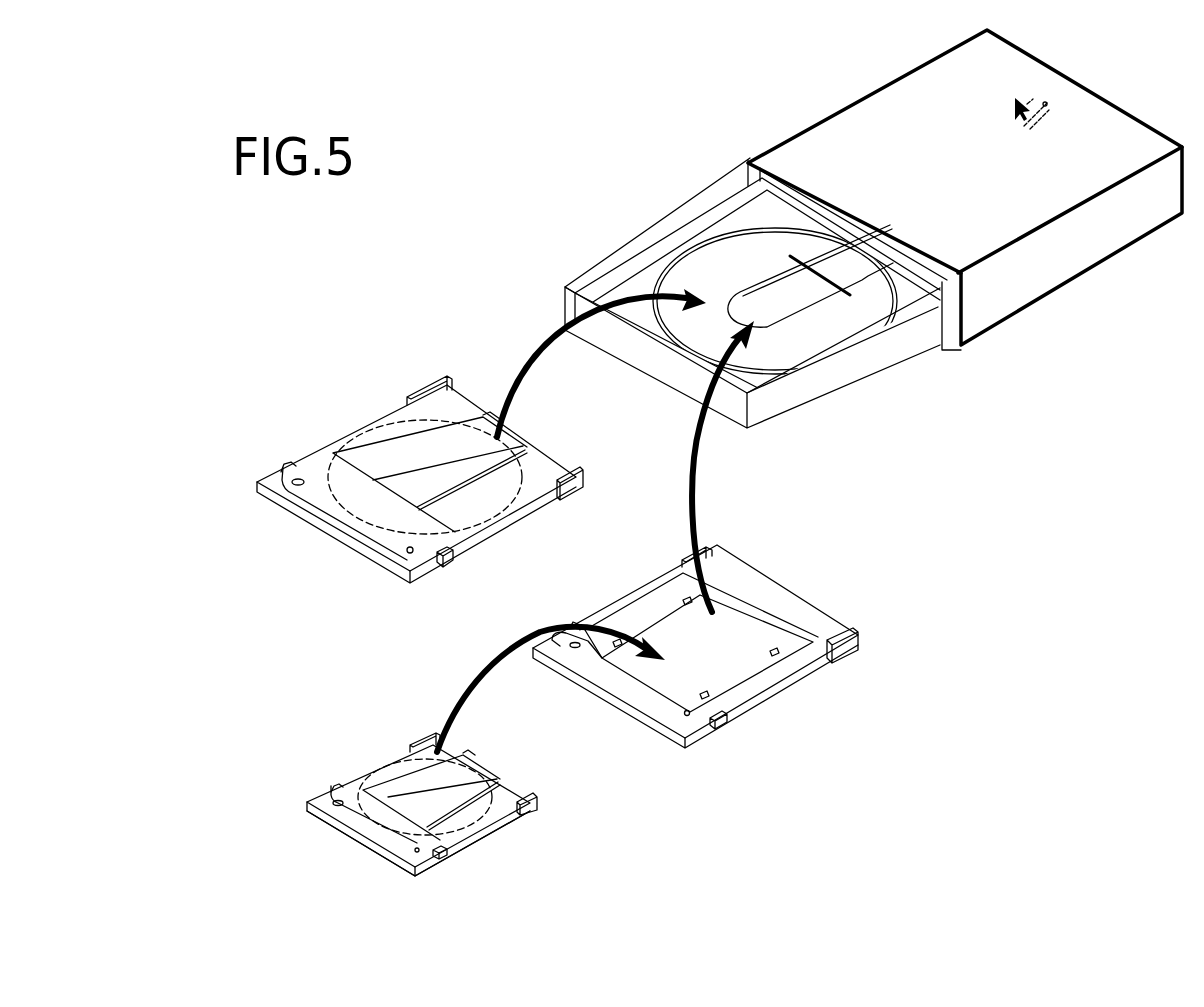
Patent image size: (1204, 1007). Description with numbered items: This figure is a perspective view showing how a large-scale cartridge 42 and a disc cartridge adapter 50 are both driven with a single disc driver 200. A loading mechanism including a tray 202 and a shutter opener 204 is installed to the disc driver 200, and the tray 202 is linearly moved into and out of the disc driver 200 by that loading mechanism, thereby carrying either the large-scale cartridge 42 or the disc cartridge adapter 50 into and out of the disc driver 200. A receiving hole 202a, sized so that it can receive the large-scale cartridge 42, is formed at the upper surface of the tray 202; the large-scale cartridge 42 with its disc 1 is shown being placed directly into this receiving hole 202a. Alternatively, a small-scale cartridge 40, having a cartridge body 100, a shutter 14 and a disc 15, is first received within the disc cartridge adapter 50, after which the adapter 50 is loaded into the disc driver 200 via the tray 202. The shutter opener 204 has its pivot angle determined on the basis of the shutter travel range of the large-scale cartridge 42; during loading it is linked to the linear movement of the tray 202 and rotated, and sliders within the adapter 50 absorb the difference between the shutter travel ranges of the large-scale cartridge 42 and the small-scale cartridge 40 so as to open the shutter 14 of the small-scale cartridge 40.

The disc 1 is at (333, 474).
The shutter 14 is at (405, 790).
The shutter 15 is at (487, 768).
The small-scale cartridge 40 is at (376, 693).
The large-scale cartridge 42 is at (400, 360).
The disc cartridge adapter 50 is at (834, 575).
The cartridge body 100 is at (425, 828).
The disc driver 200 is at (1088, 240).
The tray 202 is at (752, 287).
The receiving hole 202a is at (755, 298).
The shutter opener 204 is at (1040, 103).